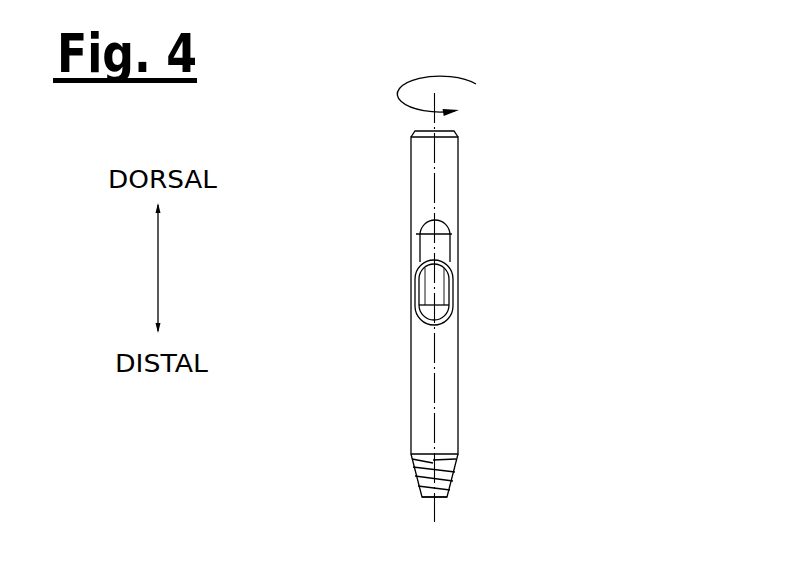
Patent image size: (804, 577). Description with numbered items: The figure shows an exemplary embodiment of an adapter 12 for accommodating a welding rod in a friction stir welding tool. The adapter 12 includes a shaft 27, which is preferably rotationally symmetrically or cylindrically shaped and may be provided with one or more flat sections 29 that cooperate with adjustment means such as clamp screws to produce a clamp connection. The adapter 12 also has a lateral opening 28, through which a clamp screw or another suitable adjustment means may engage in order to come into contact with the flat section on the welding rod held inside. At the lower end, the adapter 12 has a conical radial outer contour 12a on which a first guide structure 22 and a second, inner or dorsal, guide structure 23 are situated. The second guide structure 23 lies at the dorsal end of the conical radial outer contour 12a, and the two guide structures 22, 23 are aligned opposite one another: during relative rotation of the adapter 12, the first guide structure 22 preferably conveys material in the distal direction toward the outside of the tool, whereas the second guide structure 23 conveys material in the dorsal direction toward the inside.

The adapter 12 is at (475, 307).
The conical radial outer contour 12a is at (448, 473).
The first guide structure 22 is at (381, 499).
The second guide structure 23 is at (390, 464).
The shaft 27 is at (458, 197).
The lateral opening 28 is at (437, 297).
The flat section 29 is at (440, 253).